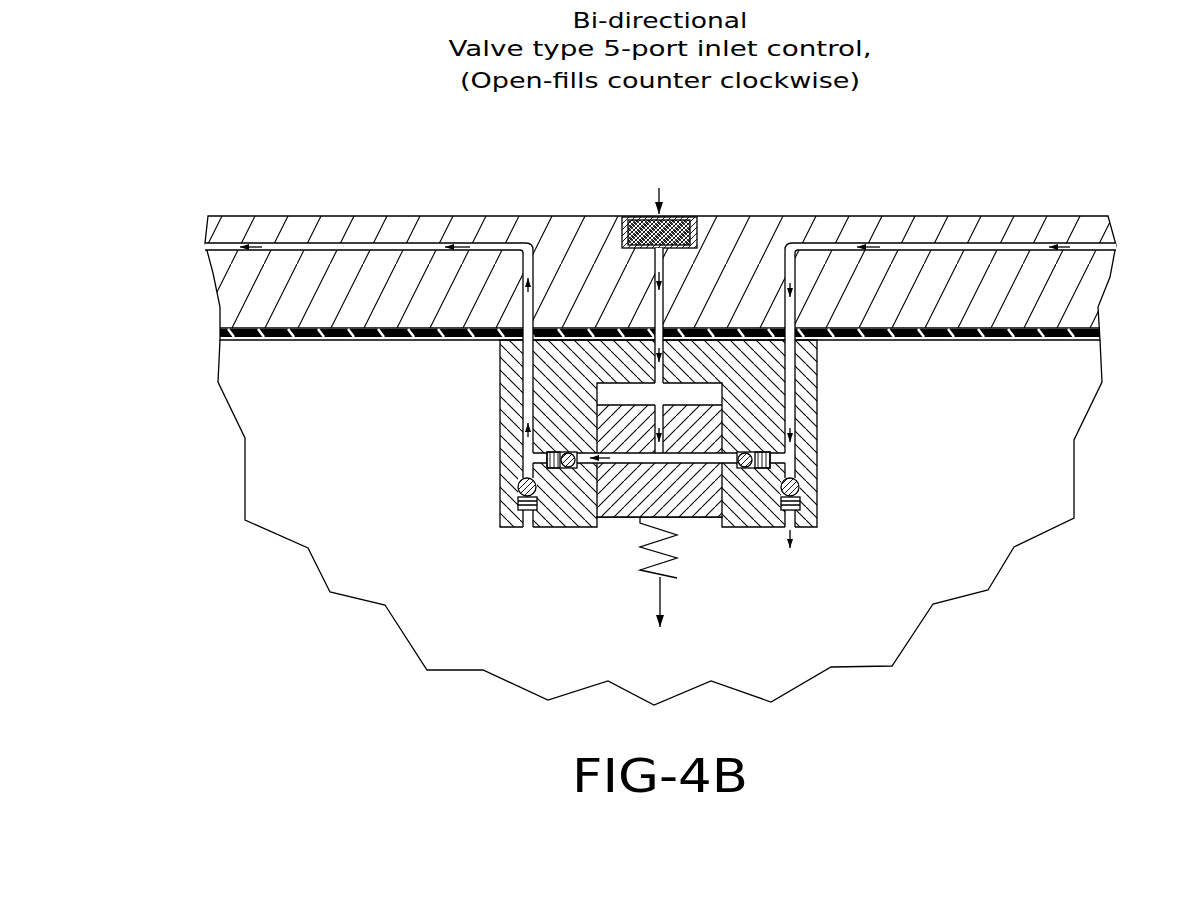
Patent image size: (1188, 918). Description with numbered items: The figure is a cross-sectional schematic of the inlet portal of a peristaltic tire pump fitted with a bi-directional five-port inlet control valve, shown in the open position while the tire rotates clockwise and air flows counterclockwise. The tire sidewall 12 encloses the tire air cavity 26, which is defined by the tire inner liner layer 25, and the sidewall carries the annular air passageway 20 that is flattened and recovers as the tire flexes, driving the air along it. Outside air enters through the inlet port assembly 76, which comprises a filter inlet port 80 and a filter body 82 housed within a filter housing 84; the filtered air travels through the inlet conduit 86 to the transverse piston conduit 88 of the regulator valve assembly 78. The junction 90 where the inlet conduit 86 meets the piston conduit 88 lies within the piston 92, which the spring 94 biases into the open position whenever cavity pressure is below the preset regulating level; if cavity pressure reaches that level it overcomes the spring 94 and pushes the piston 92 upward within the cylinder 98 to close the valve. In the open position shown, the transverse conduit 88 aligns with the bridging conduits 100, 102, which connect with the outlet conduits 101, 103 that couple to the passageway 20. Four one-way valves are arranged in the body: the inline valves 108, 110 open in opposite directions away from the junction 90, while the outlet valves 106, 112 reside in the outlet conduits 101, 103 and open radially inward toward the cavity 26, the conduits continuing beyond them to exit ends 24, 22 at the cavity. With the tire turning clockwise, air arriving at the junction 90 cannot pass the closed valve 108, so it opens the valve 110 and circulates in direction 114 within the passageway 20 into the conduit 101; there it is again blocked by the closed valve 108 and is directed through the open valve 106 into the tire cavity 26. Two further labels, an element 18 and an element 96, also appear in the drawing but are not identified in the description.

The sidewall 12 is at (246, 216).
The flow channel 18 is at (326, 246).
The air passageway 20 is at (204, 246).
The exit end 22 is at (528, 529).
The exit end 24 is at (796, 527).
The tire inner liner layer 25 is at (272, 338).
The tire air cavity 26 is at (462, 639).
The inlet port assembly 76 is at (698, 205).
The regulator valve assembly 78 is at (744, 551).
The filter inlet port 80 is at (670, 213).
The filter body 82 is at (650, 228).
The filter housing 84 is at (627, 240).
The inlet conduit 86 is at (750, 247).
The transverse piston conduit 88 is at (598, 486).
The junction 90 is at (701, 529).
The piston 92 is at (636, 505).
The spring 94 is at (672, 580).
The spring force direction 96 is at (657, 611).
The cylinder 98 is at (752, 505).
The bridging conduit 100 is at (735, 450).
The outlet conduit 101 is at (791, 395).
The bridging conduit 102 is at (595, 452).
The outlet conduit 103 is at (530, 396).
The one-way outlet valve 106 is at (798, 493).
The one-way inline valve 108 is at (766, 450).
The one-way inline valve 110 is at (552, 450).
The one-way outlet valve 112 is at (519, 493).
The direction of air flow 114 is at (262, 246).